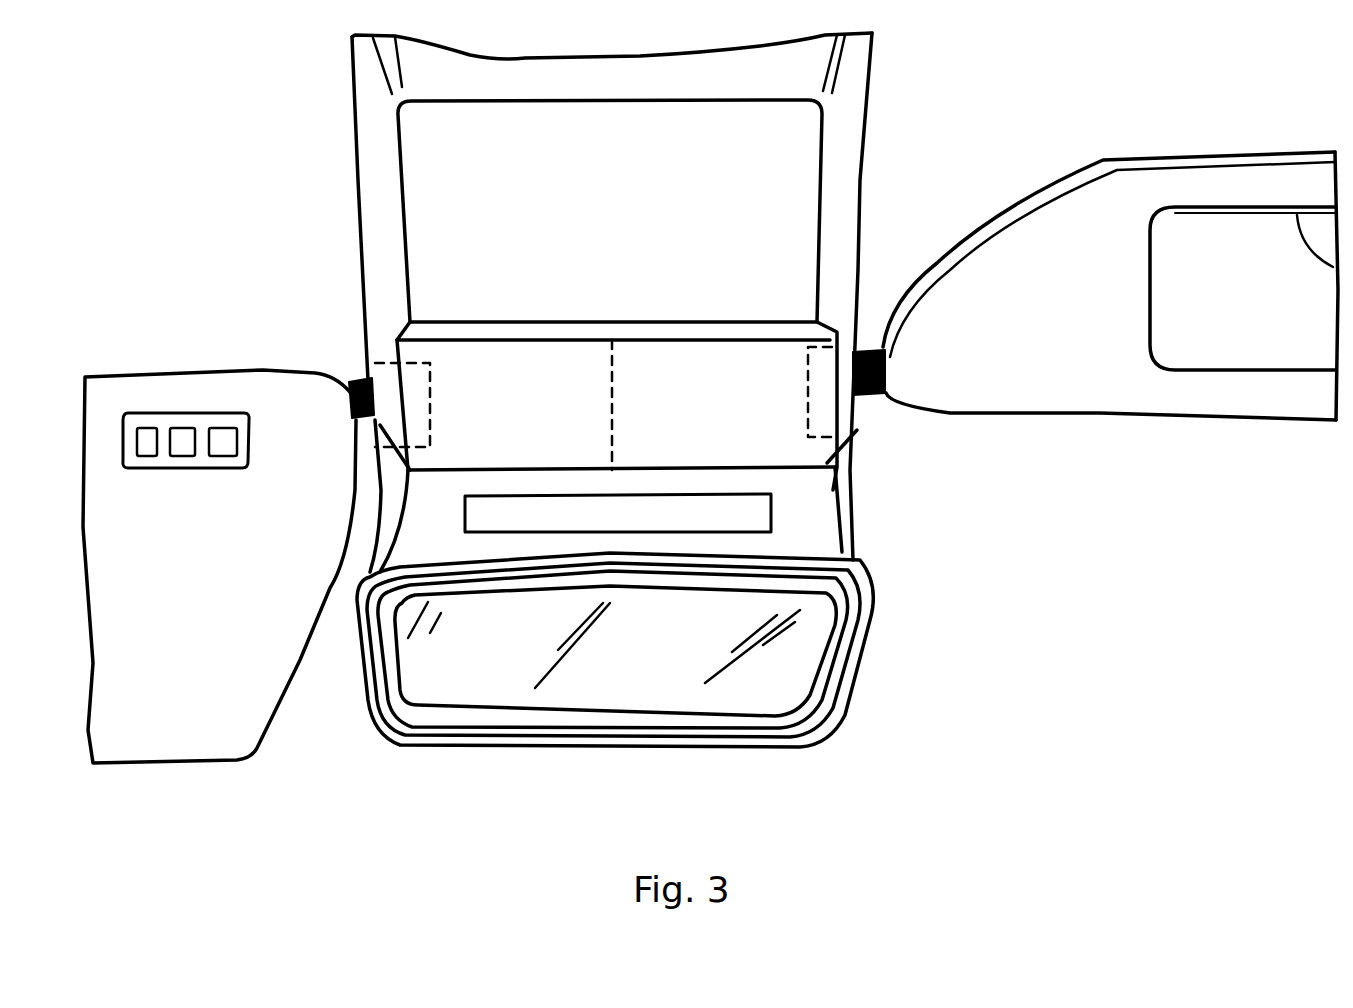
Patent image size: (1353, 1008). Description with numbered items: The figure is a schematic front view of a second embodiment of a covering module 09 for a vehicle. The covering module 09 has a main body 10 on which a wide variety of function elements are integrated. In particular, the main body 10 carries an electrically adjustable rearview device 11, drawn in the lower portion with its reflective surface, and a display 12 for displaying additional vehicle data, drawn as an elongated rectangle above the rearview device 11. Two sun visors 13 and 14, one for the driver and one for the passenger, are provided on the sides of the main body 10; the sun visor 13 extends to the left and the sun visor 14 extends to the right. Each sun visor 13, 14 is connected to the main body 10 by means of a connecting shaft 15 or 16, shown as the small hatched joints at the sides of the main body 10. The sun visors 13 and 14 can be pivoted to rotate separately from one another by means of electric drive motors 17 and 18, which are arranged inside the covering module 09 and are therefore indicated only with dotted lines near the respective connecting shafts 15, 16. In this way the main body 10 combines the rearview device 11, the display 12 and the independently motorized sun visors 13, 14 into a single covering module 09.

The covering module 09 is at (957, 638).
The main body 10 is at (845, 158).
The electrically adjustable rearview device 11 is at (793, 697).
The display 12 is at (750, 517).
The sun visor 13 is at (237, 740).
The sun visor 14 is at (1040, 390).
The connecting shaft 15 is at (352, 380).
The connecting shaft 16 is at (872, 322).
The electric drive motor 17 is at (415, 397).
The electric drive motor 18 is at (818, 387).